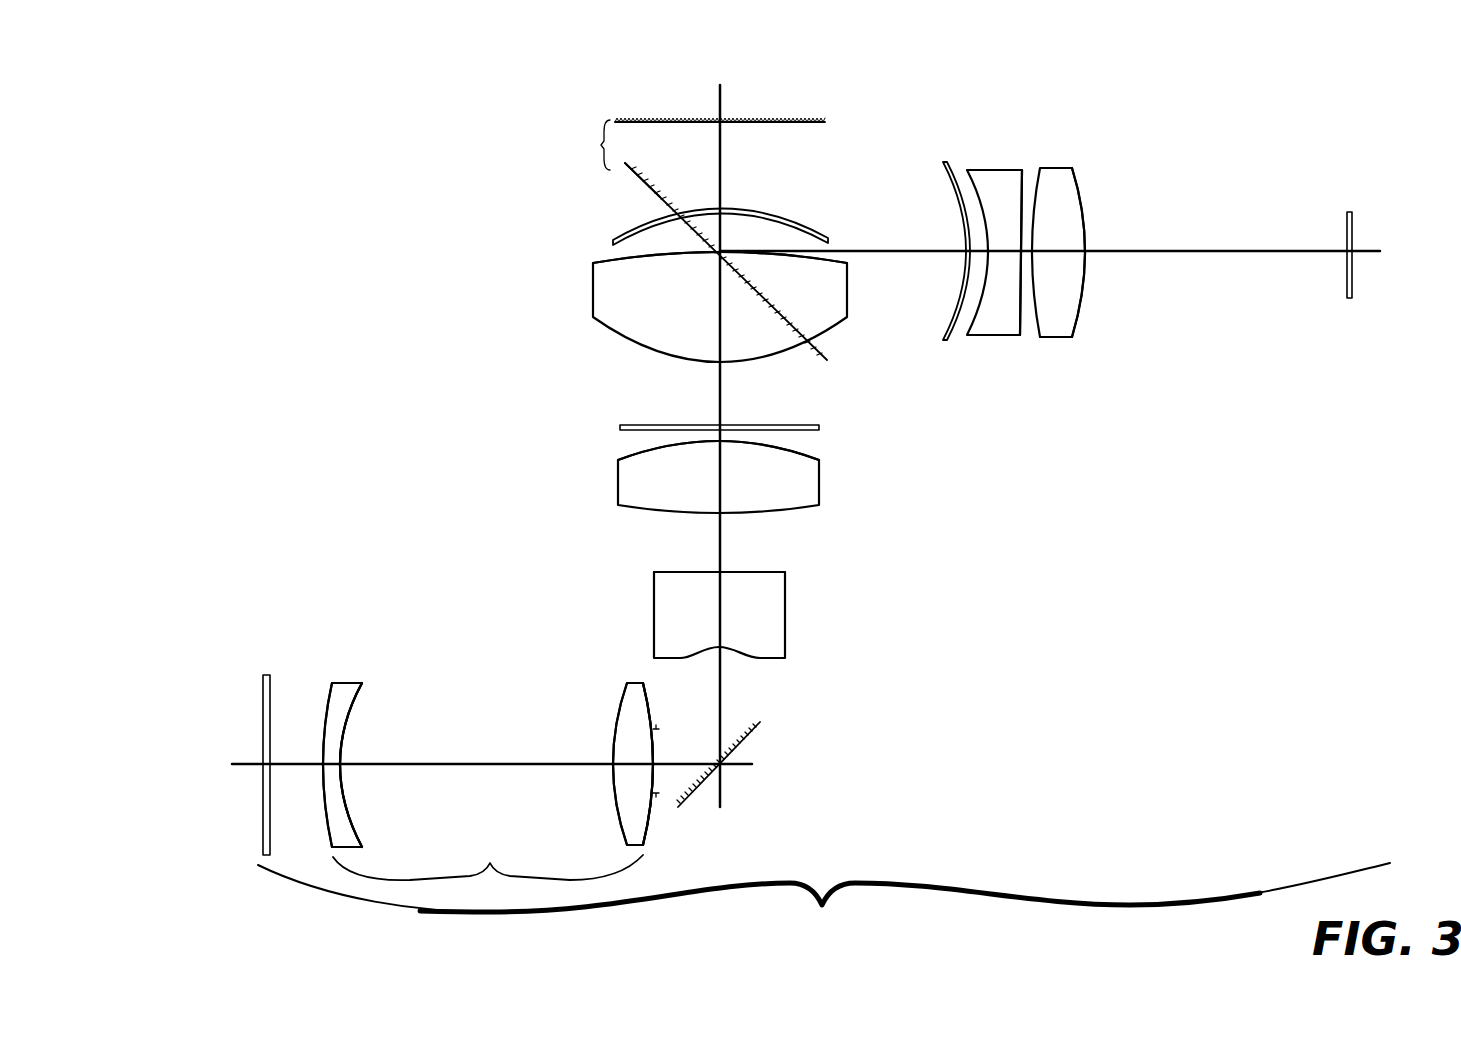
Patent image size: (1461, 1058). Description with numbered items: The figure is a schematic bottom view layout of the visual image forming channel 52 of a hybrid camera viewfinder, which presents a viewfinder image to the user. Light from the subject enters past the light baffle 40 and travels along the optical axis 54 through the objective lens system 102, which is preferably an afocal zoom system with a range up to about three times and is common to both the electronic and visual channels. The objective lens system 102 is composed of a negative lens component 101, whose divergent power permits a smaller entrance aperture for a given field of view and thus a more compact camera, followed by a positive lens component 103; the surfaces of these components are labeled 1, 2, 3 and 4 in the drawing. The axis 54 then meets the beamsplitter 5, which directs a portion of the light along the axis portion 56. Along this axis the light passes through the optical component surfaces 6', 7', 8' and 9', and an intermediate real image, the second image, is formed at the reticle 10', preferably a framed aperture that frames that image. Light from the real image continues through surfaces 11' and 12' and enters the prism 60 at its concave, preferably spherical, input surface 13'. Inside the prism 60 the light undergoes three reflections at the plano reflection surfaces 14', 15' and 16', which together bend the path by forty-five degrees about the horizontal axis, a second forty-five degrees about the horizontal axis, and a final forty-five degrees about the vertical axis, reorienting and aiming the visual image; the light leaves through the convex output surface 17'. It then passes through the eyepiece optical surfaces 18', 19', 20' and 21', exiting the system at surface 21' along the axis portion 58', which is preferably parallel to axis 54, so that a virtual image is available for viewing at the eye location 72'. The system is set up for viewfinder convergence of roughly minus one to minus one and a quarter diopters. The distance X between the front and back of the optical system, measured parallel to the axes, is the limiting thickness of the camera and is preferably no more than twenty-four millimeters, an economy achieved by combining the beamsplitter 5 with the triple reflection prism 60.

The first lens element 1 is at (326, 708).
The second lens element surface 2 is at (352, 700).
The third lens element 3 is at (617, 715).
The fourth lens element surface 4 is at (653, 712).
The beamsplitter 5 is at (757, 732).
The optical component surface 6' is at (696, 616).
The optical component surface 7' is at (716, 554).
The optical component surface 8' is at (709, 489).
The optical component surface 9' is at (703, 450).
The reticle 10' is at (700, 409).
The optical component surface 11' is at (707, 307).
The optical component surface 12' is at (697, 249).
The prism input surface 13' is at (703, 214).
The plano reflection surface 14' is at (662, 179).
The plano reflection surface 15' is at (720, 102).
The plano reflection surface 16' is at (760, 269).
The prism output surface 17' is at (947, 236).
The optical surface 18' is at (994, 236).
The optical surface 19' is at (1019, 220).
The optical surface 20' is at (1063, 234).
The eyepiece component surface 21' is at (1109, 252).
The light baffle 40 is at (263, 856).
The visual image forming channel 52 is at (1063, 532).
The optical axis 54 is at (240, 768).
The optical axis portion 56 is at (722, 544).
The optical axis portion 58' is at (1050, 274).
The prism 60 is at (592, 145).
The eye location 72' is at (1380, 255).
The negative lens component 101 is at (332, 848).
The objective lens system 102 is at (488, 879).
The positive lens component 103 is at (648, 846).
The distance X is at (824, 902).